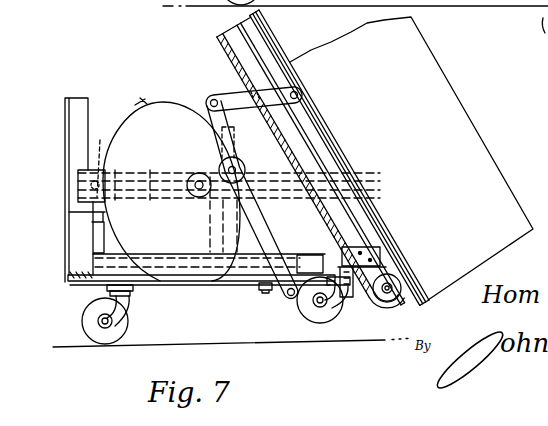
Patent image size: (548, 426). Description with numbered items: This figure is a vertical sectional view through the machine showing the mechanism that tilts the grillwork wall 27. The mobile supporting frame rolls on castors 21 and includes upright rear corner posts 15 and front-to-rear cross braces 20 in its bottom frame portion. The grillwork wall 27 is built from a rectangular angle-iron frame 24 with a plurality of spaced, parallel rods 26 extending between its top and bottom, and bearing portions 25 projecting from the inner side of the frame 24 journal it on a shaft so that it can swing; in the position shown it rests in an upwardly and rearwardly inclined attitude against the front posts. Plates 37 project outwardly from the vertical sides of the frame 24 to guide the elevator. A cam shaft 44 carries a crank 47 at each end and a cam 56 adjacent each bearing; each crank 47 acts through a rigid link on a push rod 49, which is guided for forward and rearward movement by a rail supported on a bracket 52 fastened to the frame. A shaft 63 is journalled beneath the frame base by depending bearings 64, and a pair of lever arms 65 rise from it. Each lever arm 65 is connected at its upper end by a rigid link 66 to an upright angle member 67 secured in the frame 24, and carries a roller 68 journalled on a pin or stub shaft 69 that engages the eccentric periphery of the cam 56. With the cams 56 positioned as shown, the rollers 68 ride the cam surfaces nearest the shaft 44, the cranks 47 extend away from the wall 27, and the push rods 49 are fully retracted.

The upright rear corner post 15 is at (72, 120).
The cross brace 20 is at (156, 279).
The castor 21 is at (90, 321).
The rectangular frame 24 is at (428, 304).
The bearing portion 25 is at (533, 19).
The rod 26 is at (415, 261).
The grillwork wall 27 is at (385, 213).
The outwardly extending plate 37 is at (492, 175).
The cam shaft 44 is at (197, 196).
The crank 47 is at (105, 160).
The push rod 49 is at (343, 160).
The bracket 52 is at (77, 211).
The cam 56 is at (128, 238).
The shaft 63 is at (290, 299).
The bearing 64 is at (264, 289).
The lever arm 65 is at (283, 247).
The rigid link 66 is at (231, 112).
The upright angle member 67 is at (330, 136).
The roller 68 is at (198, 174).
The pin or stub shaft 69 is at (234, 168).